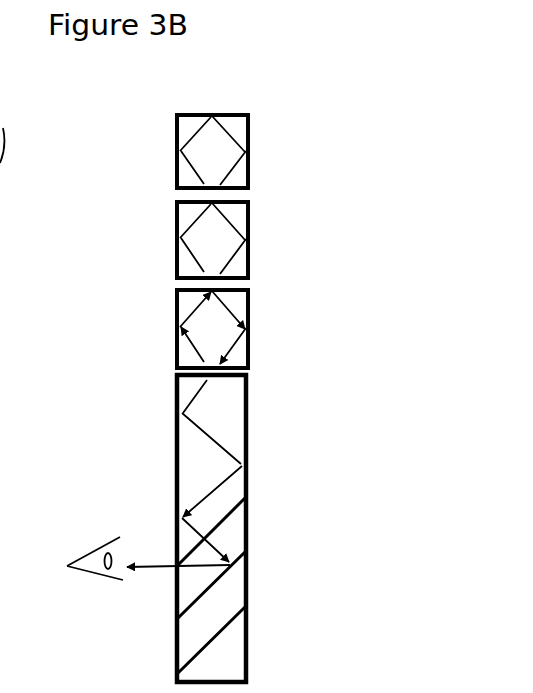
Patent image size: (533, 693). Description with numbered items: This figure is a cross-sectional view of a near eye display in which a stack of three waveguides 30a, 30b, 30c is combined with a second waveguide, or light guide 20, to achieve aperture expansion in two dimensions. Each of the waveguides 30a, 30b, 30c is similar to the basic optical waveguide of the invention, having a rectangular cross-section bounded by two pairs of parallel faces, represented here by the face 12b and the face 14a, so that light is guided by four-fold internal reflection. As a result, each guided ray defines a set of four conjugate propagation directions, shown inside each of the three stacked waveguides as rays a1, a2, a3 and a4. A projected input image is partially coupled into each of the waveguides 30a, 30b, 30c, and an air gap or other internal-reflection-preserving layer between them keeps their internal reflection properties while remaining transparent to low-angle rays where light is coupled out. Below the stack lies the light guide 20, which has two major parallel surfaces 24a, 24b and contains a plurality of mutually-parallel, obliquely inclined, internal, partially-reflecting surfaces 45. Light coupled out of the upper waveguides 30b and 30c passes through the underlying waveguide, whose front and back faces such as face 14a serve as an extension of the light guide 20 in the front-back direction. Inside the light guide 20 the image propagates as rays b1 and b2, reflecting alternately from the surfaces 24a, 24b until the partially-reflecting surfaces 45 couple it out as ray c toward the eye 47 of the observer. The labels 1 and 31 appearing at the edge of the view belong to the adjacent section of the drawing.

The display system 1 is at (6, 133).
The light source 31 is at (0, 245).
The waveguide 30c is at (191, 151).
The waveguide 30b is at (190, 240).
The waveguide 30a is at (191, 324).
The face 14a is at (170, 315).
The face 12b is at (176, 351).
The light guide 20 is at (250, 422).
The major parallel surface 24a is at (170, 458).
The major parallel surface 24b is at (254, 512).
The partially-reflecting surfaces 45 is at (236, 587).
The eye 47 is at (95, 567).
The ray a1 is at (198, 258).
The ray a2 is at (197, 225).
The ray a3 is at (230, 222).
The ray a4 is at (234, 261).
The ray b1 is at (212, 448).
The ray b2 is at (210, 487).
The output light ray c is at (178, 555).